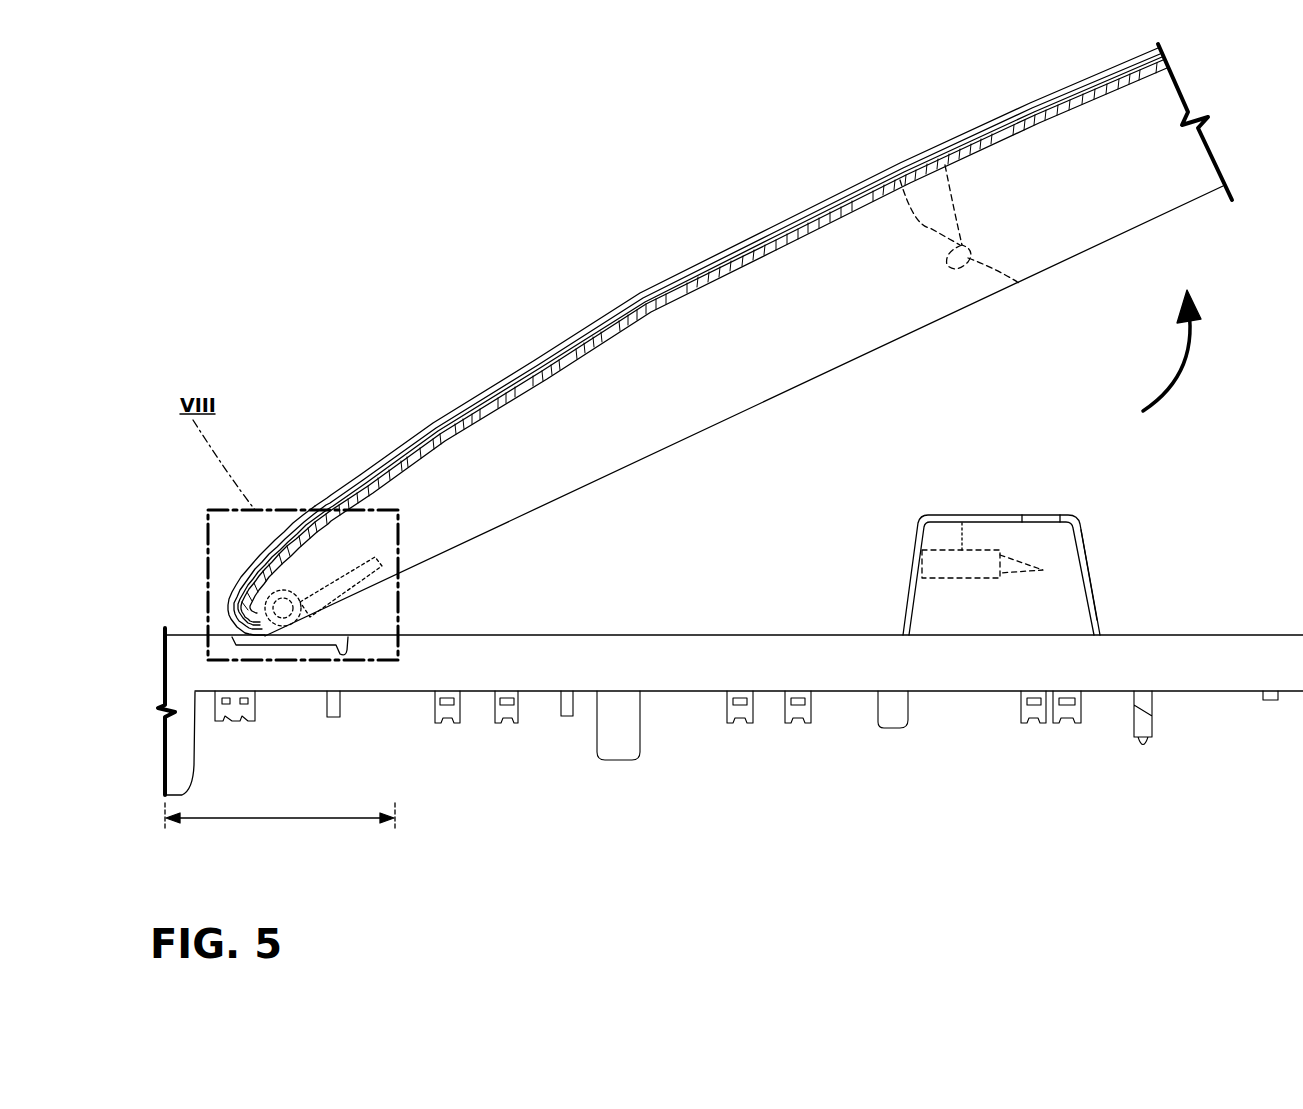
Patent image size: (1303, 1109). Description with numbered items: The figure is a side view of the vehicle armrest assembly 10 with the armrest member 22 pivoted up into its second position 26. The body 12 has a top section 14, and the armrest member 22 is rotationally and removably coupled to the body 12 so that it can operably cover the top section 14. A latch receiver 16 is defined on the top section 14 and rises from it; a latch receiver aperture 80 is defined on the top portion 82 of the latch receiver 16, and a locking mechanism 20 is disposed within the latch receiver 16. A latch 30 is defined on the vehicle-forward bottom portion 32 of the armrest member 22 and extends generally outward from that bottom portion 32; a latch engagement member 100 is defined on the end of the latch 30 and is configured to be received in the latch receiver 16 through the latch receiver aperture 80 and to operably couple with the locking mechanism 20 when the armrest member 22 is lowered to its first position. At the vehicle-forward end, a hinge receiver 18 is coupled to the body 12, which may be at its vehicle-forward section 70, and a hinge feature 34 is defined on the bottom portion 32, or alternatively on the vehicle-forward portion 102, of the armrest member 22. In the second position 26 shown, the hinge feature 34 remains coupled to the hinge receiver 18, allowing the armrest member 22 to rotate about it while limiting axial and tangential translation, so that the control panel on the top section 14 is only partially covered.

The vehicle armrest assembly 10 is at (564, 278).
The body 12 is at (1193, 691).
The top section 14 is at (958, 637).
The latch receiver 16 is at (1097, 598).
The hinge receiver 18 is at (247, 632).
The locking mechanism 20 is at (962, 515).
The armrest member 22 is at (432, 422).
The second position 26 is at (512, 380).
The latch 30 is at (957, 145).
The bottom portion 32 is at (495, 542).
The hinge feature 34 is at (290, 596).
The vehicle-forward section 70 is at (258, 820).
The latch receiver aperture 80 is at (1050, 515).
The top portion 82 is at (940, 515).
The latch engagement member 100 is at (1019, 283).
The vehicle-forward portion 102 is at (229, 580).